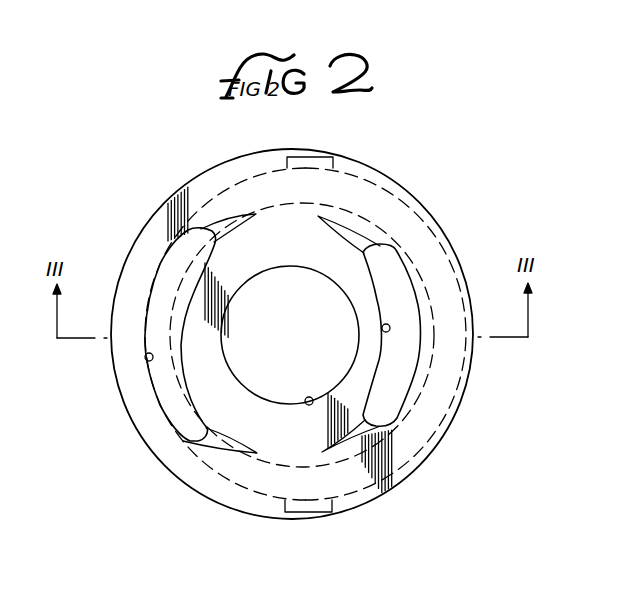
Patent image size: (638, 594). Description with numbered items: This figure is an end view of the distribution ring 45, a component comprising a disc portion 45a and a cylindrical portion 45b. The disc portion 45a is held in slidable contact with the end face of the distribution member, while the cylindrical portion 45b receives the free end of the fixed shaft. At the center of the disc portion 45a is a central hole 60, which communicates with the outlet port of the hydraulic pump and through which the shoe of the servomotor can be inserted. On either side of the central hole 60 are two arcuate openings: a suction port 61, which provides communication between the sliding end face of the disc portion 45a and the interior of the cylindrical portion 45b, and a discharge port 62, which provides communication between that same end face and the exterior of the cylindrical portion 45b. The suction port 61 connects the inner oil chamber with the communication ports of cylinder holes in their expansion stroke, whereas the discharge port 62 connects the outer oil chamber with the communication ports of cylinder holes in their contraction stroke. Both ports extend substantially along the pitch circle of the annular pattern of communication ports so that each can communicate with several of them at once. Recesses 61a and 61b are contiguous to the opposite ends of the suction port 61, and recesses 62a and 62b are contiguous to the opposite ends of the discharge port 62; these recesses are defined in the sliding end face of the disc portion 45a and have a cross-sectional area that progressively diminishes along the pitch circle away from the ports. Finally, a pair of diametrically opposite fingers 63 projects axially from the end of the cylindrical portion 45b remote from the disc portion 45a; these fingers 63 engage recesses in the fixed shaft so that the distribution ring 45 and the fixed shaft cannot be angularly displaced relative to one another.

The distribution ring 45 is at (436, 185).
The disc portion 45a is at (157, 232).
The cylindrical portion 45b is at (437, 237).
The central hole 60 is at (307, 405).
The suction port 61 is at (382, 328).
The recess 61a is at (351, 446).
The recess 61b is at (348, 236).
The discharge port 62 is at (146, 360).
The recess 62a is at (228, 233).
The recess 62b is at (230, 442).
The fingers 63 is at (333, 157).